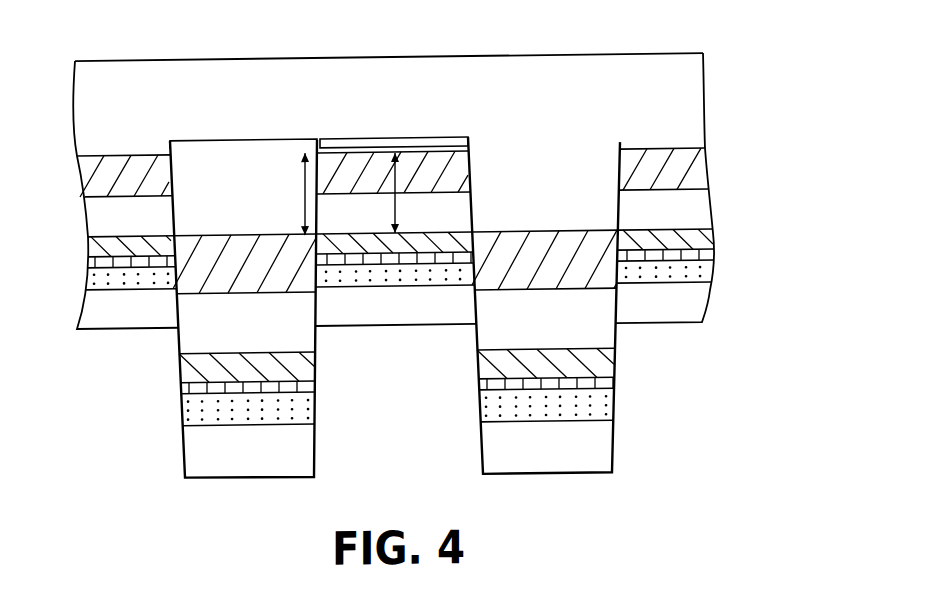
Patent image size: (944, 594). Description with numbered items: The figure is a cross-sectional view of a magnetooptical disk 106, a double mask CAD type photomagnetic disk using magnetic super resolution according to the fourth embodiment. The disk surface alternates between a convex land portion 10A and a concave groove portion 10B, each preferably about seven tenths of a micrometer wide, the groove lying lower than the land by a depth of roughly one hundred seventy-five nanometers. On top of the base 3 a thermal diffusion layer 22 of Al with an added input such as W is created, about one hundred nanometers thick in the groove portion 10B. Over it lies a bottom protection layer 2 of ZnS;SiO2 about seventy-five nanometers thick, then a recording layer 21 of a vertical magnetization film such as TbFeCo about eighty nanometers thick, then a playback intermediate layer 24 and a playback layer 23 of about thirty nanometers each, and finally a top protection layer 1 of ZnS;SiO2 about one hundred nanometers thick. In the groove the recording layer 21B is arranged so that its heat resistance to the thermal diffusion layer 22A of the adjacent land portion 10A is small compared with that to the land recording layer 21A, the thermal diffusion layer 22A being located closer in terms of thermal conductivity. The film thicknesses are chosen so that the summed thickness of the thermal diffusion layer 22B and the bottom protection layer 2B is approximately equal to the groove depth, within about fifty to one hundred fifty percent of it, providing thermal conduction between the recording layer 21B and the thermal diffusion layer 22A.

The magnetooptical disk 106 is at (761, 100).
The top protection layer 1 is at (698, 321).
The base 3 is at (682, 117).
The land portion 10A is at (238, 143).
The groove portion 10B is at (392, 143).
The thermal diffusion layer 22 is at (703, 176).
The thermal diffusion layer 22A is at (215, 253).
The thermal diffusion layer 22B is at (453, 174).
The bottom protection layer 2 is at (705, 209).
The bottom protection layer 2B is at (453, 211).
The recording layer 21 is at (708, 244).
The recording layer 21A is at (303, 374).
The recording layer 21B is at (480, 238).
The playback intermediate layer 24 is at (707, 267).
The playback layer 23 is at (707, 286).